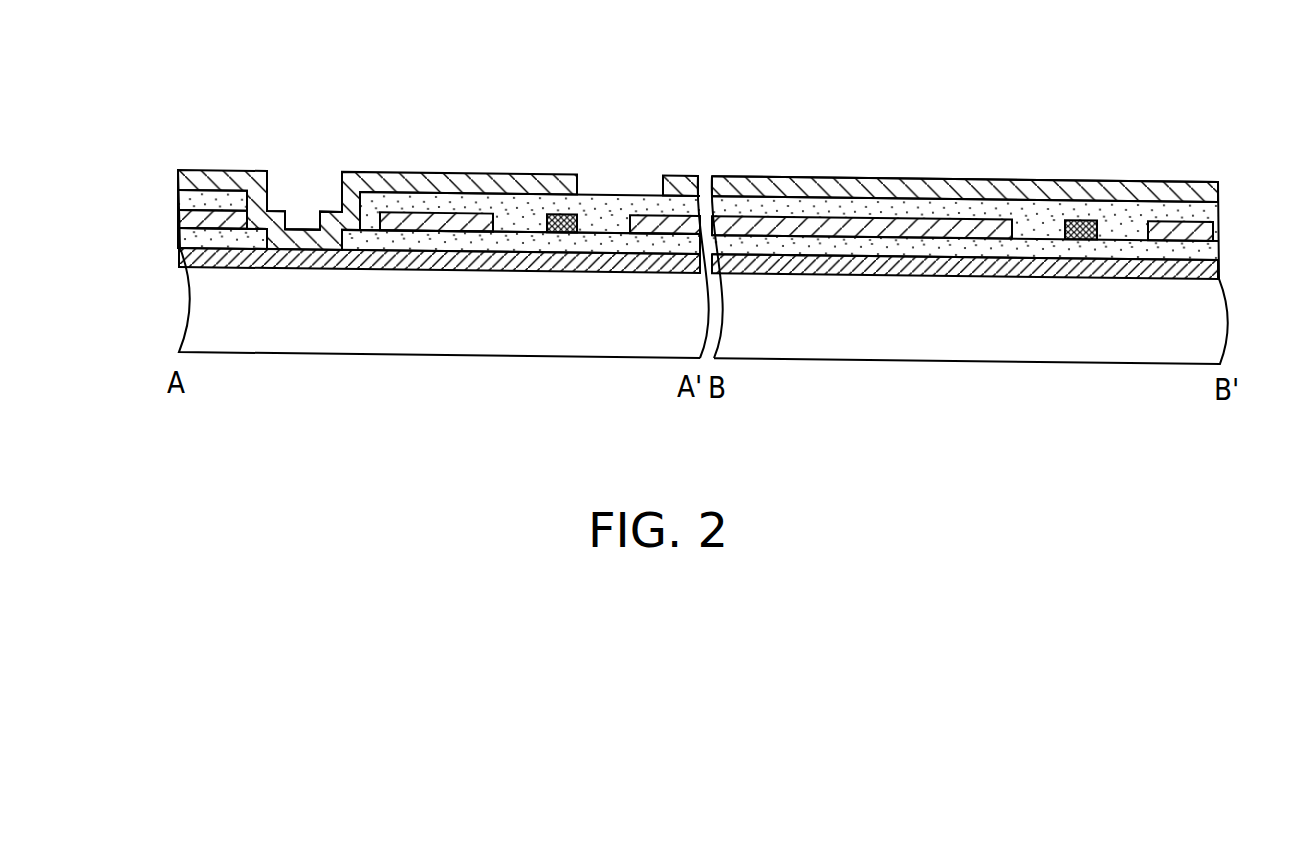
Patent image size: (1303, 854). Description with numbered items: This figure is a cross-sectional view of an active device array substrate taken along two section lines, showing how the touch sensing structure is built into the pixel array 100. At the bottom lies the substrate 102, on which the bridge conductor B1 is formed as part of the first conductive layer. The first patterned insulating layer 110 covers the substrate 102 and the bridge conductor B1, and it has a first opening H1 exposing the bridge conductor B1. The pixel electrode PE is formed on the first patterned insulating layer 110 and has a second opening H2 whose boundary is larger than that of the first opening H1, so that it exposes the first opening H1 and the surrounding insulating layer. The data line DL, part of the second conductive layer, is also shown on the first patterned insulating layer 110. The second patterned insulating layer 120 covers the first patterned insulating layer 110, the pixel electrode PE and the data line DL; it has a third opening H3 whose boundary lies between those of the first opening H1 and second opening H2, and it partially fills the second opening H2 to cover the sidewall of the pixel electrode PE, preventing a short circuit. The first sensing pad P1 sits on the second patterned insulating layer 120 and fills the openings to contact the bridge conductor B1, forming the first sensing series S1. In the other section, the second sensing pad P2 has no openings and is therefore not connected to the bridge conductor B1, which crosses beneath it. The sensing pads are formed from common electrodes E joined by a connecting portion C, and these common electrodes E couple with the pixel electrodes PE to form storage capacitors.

The pixel array 100 is at (1235, 200).
The substrate 102 is at (203, 308).
The first patterned insulating layer 110 is at (173, 237).
The second patterned insulating layer 120 is at (173, 198).
The first sensing series S1 is at (362, 53).
The first sensing pad P1 is at (298, 228).
The bridge conductor B1 is at (317, 228).
The first opening H1 is at (268, 234).
The second opening H2 is at (233, 207).
The third opening H3 is at (358, 206).
The pixel electrode PE is at (458, 217).
The data line DL is at (560, 217).
The second sensing pad P2 is at (683, 187).
The common electrode E is at (920, 185).
The connecting portion C is at (1137, 188).